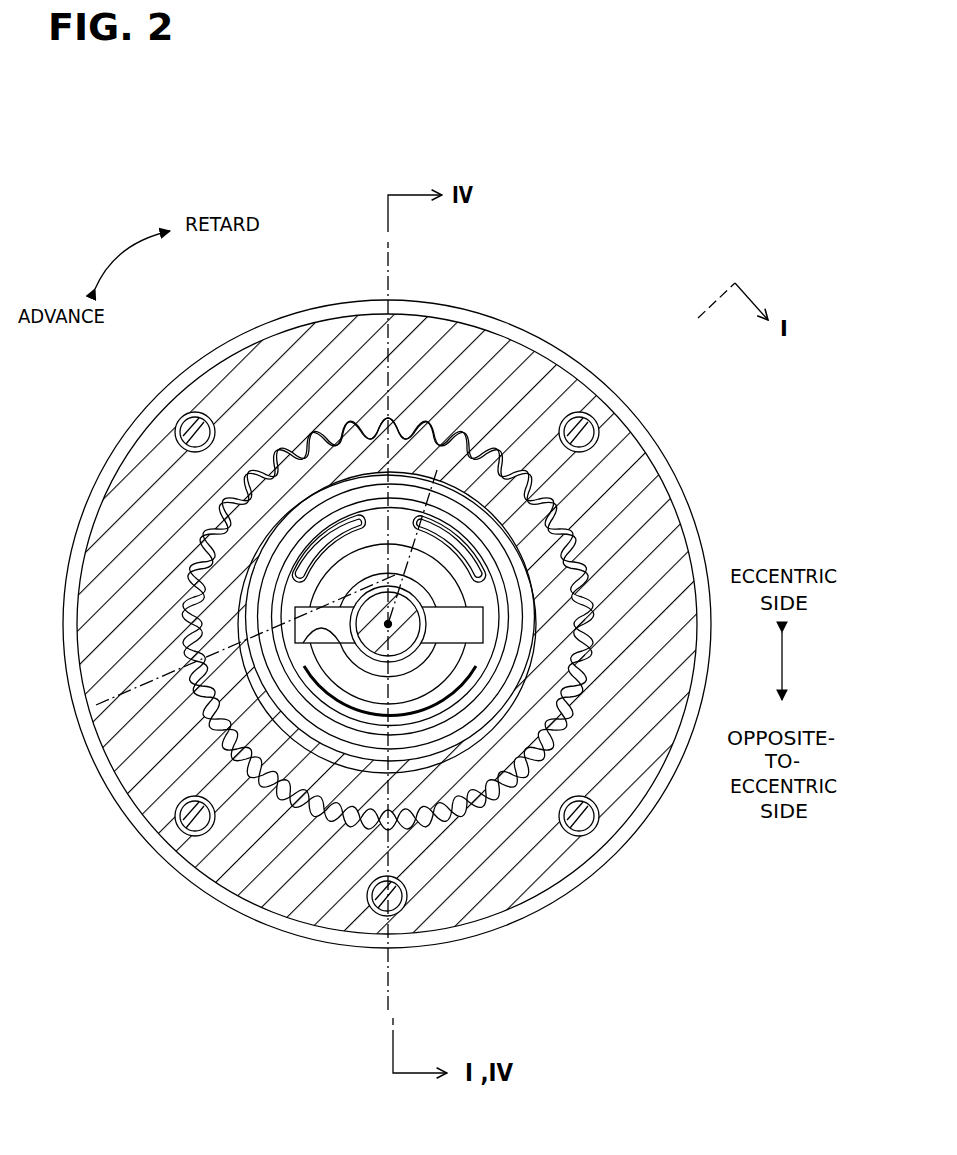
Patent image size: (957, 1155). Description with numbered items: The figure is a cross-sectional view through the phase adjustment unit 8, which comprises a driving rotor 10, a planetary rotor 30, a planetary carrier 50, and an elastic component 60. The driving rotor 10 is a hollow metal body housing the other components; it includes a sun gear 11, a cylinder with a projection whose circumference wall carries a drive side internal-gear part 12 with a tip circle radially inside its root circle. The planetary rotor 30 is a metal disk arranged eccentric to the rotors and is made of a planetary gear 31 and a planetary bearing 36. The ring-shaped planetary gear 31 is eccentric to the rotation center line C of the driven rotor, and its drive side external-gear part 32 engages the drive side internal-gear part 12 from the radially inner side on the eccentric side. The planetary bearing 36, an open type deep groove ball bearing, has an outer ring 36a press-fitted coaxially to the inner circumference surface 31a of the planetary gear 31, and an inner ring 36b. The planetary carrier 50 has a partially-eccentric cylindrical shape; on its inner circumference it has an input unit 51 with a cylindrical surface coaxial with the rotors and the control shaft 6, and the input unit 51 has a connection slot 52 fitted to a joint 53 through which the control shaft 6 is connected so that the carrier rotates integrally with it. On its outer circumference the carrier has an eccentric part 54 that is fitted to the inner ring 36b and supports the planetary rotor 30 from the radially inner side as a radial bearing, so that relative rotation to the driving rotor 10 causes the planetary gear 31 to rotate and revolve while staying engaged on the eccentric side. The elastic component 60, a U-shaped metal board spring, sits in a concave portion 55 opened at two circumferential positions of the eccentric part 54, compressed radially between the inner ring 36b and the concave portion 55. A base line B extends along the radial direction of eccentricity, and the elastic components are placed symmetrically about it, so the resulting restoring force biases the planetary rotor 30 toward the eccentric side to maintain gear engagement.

The phase adjustment unit 8 is at (523, 310).
The driving rotor 10 is at (101, 542).
The sun gear 11 is at (101, 542).
The drive side internal-gear part 12 is at (190, 590).
The planetary rotor 30 is at (70, 381).
The planetary gear 31 is at (157, 482).
The inner circumference surface 31a is at (262, 483).
The drive side external-gear part 32 is at (200, 600).
The planetary bearing 36 is at (154, 449).
The outer ring 36a is at (590, 512).
The inner ring 36b is at (600, 560).
The planetary carrier 50 is at (150, 790).
The input unit 51 is at (400, 700).
The connection slot 52 is at (367, 672).
The joint 53 is at (490, 740).
The eccentric part 54 is at (490, 598).
The concave portion 55 is at (328, 528).
The elastic component 60 is at (305, 540).
The control shaft 6 is at (420, 707).
The base line B is at (96, 705).
The rotation center line C is at (437, 470).